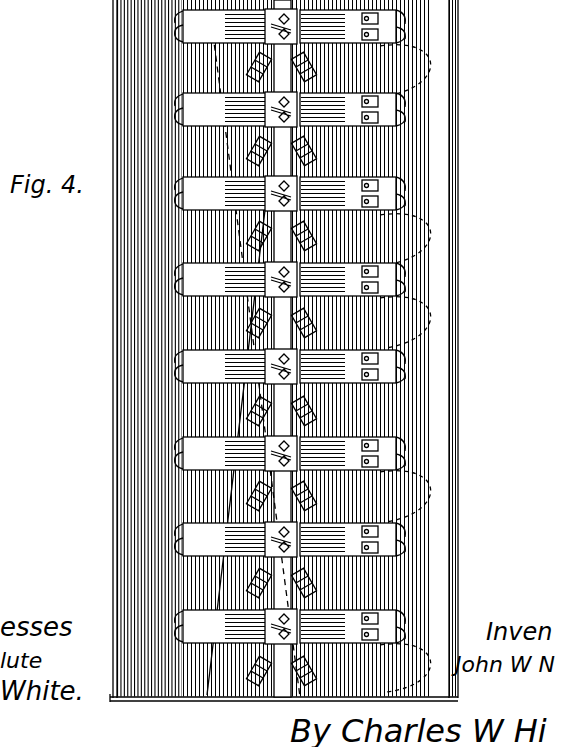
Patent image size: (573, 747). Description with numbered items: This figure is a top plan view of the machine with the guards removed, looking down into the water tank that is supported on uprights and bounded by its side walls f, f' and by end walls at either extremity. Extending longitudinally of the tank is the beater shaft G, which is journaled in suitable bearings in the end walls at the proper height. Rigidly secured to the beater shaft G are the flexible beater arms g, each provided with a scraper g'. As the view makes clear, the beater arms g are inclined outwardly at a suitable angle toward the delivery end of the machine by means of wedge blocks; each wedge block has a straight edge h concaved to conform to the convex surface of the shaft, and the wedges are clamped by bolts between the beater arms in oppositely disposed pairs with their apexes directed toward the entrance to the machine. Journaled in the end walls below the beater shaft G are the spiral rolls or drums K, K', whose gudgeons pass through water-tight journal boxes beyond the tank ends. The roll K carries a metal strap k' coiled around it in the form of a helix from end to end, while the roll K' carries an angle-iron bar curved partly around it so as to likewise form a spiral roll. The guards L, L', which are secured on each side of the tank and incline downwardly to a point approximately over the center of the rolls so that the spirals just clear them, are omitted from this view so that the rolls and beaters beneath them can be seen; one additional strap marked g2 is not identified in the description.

The side wall f is at (464, 275).
The side wall f' is at (128, 362).
The spiral roll or drum K' is at (231, 273).
The spiral roll or drum K is at (290, 346).
The straight edge of wedge block h is at (250, 236).
The guard L' is at (116, 349).
The guard L is at (461, 349).
The beater shaft G is at (280, 430).
The scraper g' is at (290, 453).
The flexible beater arm g is at (290, 539).
The strap g2 is at (290, 627).
The bar, strap or band k' is at (315, 590).